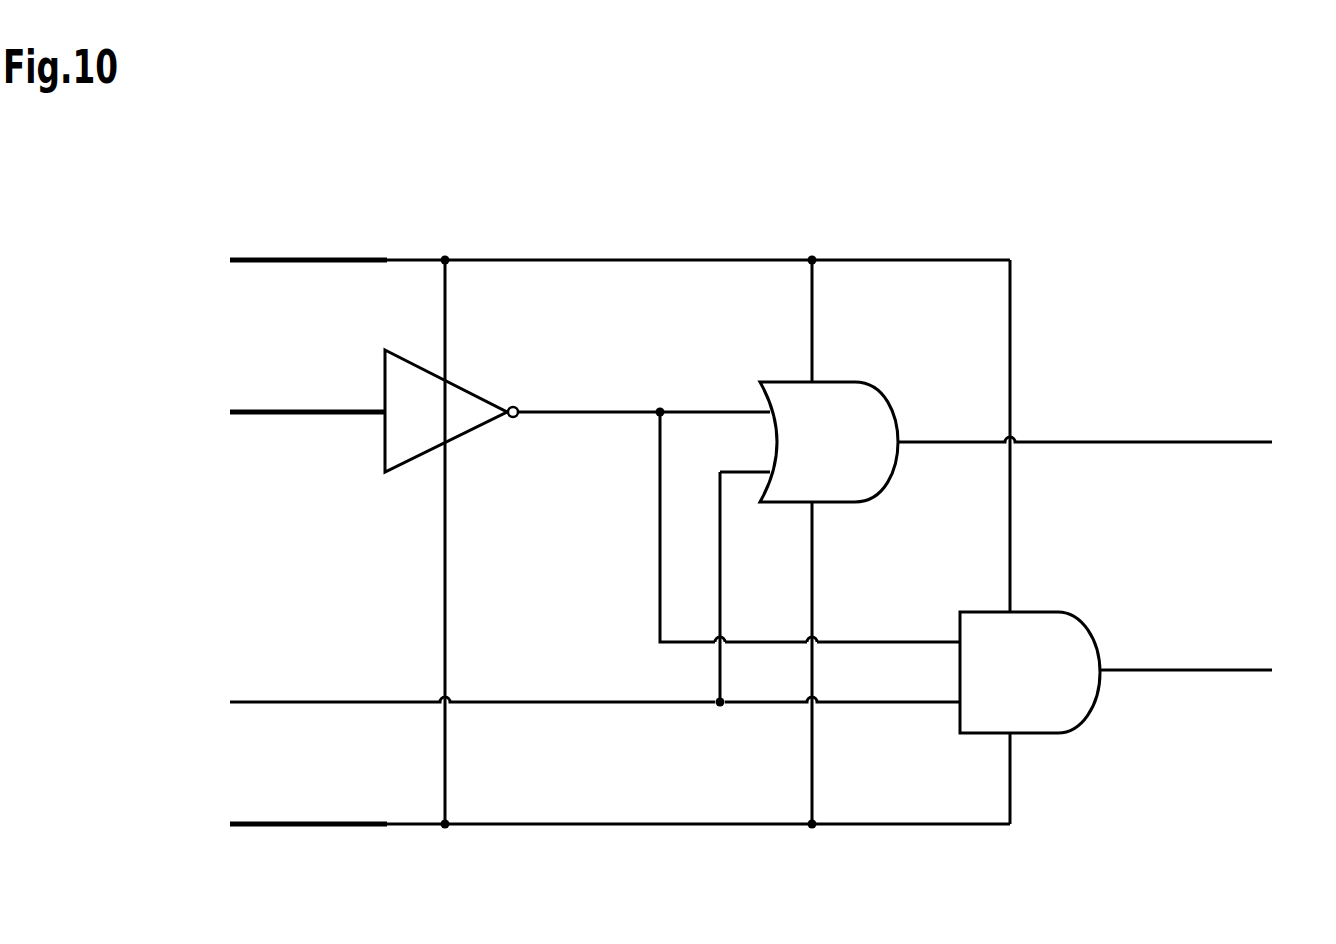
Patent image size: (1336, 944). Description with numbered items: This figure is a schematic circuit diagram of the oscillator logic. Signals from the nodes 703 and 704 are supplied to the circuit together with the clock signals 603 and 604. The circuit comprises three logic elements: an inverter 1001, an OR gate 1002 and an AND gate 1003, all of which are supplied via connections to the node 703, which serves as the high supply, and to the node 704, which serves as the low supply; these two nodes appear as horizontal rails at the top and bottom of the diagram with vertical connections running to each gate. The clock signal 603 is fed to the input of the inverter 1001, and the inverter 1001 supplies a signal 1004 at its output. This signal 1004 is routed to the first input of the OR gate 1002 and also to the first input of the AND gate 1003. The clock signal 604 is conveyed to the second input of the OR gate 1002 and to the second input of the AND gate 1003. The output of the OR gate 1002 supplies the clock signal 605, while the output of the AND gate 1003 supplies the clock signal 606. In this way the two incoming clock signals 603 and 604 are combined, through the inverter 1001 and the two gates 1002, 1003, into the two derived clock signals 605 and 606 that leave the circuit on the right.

The node 703 is at (594, 262).
The clock signal 603 is at (281, 413).
The clock signal 604 is at (569, 595).
The node 704 is at (594, 825).
The clock signal 605 is at (1109, 443).
The clock signal 606 is at (1210, 671).
The inverter 1001 is at (383, 443).
The OR gate 1002 is at (778, 380).
The AND gate 1003 is at (1030, 713).
The signal 1004 is at (739, 508).